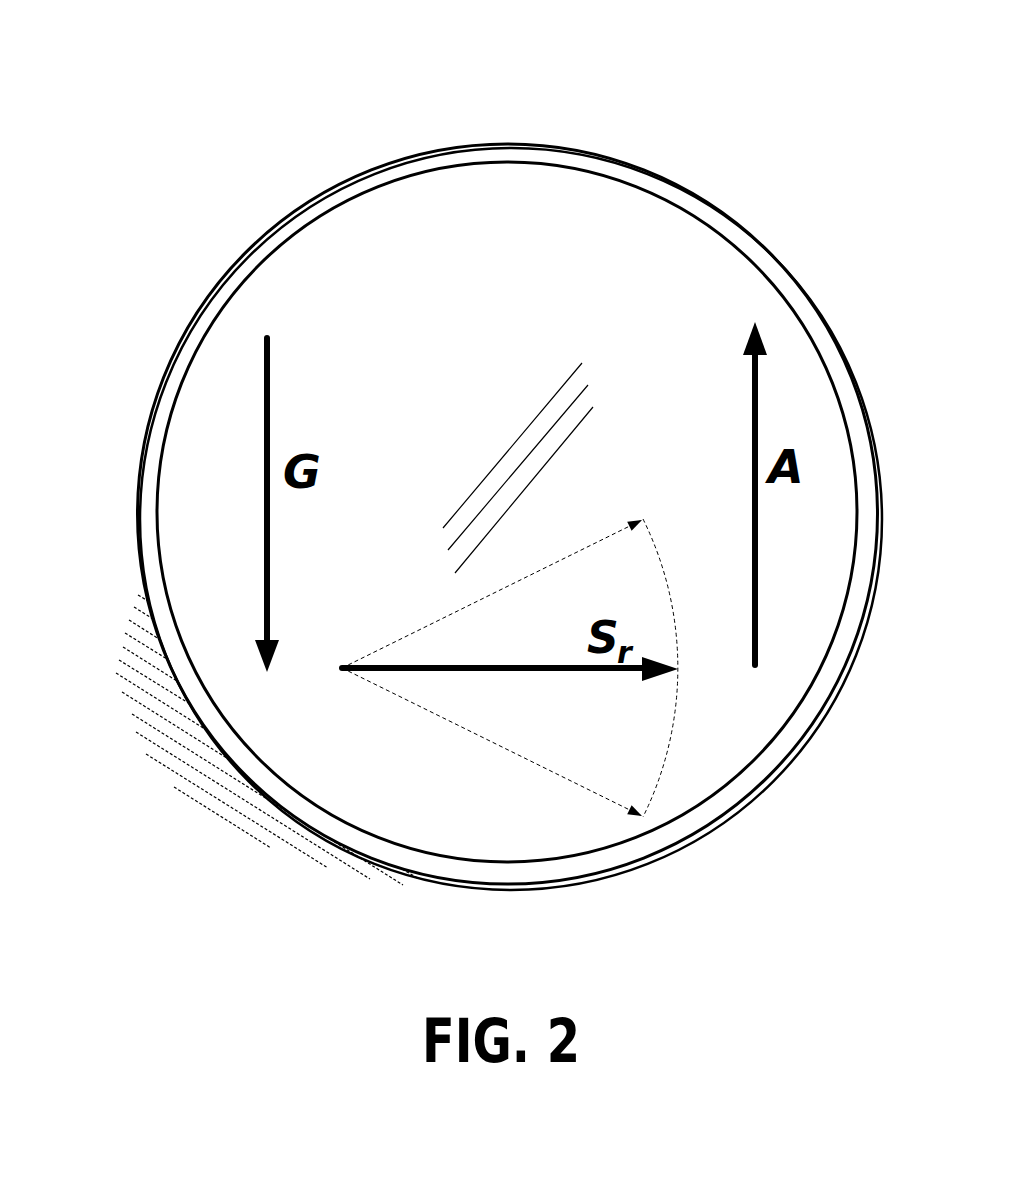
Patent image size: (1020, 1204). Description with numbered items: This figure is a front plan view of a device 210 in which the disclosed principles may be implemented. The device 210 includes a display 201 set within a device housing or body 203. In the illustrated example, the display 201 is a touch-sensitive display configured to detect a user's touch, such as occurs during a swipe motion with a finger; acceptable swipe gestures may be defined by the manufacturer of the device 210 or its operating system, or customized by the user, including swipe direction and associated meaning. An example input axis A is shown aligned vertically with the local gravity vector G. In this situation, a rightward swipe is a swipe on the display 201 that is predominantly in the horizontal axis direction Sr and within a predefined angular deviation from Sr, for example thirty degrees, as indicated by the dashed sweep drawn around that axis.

The display 201 is at (230, 368).
The device housing 203 is at (295, 210).
The device 210 is at (417, 128).